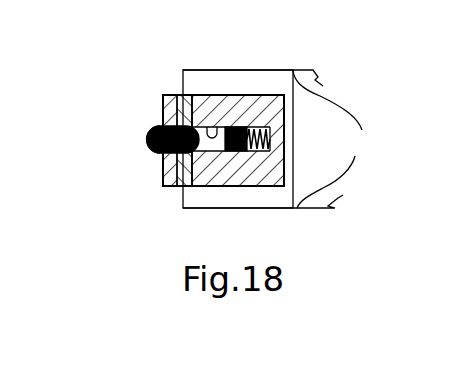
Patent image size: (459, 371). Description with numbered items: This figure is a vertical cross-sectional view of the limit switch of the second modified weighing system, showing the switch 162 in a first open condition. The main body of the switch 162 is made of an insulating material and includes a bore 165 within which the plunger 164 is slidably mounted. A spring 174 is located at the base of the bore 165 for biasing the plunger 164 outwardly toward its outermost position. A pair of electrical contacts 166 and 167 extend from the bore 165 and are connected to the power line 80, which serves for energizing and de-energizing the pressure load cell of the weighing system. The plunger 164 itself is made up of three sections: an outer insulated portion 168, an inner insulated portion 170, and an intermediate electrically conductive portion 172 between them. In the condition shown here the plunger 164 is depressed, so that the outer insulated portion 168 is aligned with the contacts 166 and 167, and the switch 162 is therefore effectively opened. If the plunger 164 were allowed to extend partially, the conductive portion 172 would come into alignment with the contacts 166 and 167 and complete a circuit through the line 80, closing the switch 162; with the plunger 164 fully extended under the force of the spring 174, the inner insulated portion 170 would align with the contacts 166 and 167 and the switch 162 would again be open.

The power line 80 is at (276, 139).
The switch 162 is at (252, 105).
The plunger 164 is at (137, 155).
The bore 165 is at (205, 126).
The electrical contact 166 is at (183, 93).
The electrical contact 167 is at (173, 172).
The outer insulated portion 168 is at (149, 137).
The inner insulated portion 170 is at (210, 150).
The intermediate electrically conductive portion 172 is at (238, 154).
The spring 174 is at (270, 139).